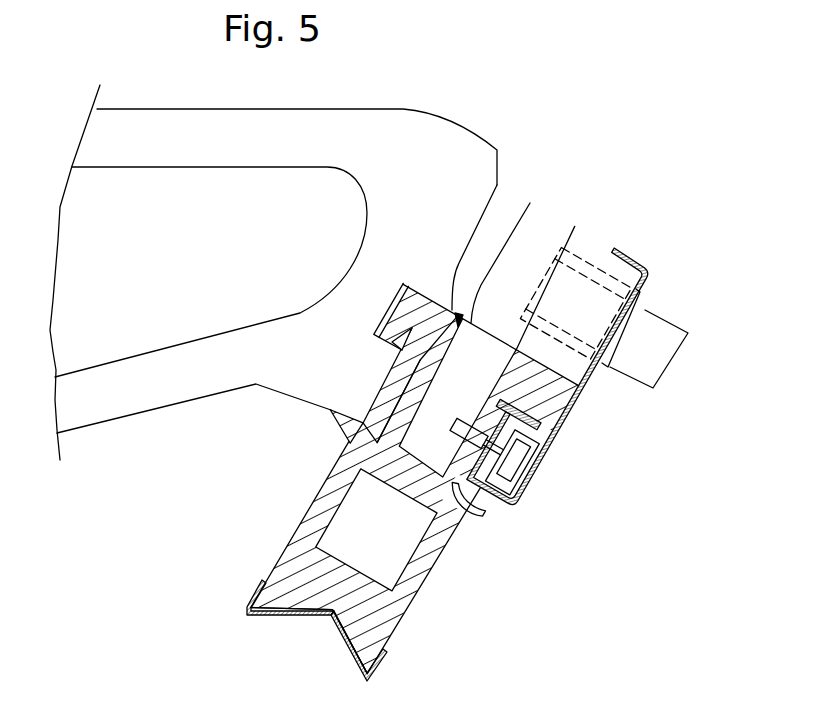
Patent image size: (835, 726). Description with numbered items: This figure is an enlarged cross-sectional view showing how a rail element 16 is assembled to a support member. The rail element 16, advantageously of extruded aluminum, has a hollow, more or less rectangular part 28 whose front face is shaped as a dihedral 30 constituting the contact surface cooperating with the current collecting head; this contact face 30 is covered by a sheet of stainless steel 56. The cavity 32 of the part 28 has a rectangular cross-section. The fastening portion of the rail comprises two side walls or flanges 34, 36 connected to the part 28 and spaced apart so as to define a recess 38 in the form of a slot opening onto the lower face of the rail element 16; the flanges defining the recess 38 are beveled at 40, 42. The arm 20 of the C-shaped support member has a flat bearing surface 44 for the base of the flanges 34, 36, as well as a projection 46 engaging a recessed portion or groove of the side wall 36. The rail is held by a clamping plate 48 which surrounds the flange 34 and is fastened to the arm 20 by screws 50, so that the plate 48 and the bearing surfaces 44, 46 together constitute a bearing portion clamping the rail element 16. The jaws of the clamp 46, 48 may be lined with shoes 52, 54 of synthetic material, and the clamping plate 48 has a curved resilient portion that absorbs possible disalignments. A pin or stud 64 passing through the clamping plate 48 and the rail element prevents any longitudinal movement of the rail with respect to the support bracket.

The arm 20 is at (353, 138).
The flat bearing surface 44 is at (500, 193).
The bevel 42 is at (521, 209).
The bevel 40 is at (575, 226).
The screws 50 is at (650, 337).
The side wall or flange 36 is at (485, 327).
The projection 46 is at (395, 368).
The recess 38 is at (470, 405).
The shoe 52 is at (387, 403).
The side wall or flange 34 is at (458, 425).
The clamping plate 48 is at (533, 475).
The pin or stud 64 is at (522, 480).
The shoe 54 is at (483, 513).
The hollow rectangular part 28 is at (330, 498).
The cavity 32 is at (390, 542).
The rail element 16 is at (380, 617).
The dihedral 30 is at (300, 618).
The sheet of stainless steel 56 is at (373, 675).